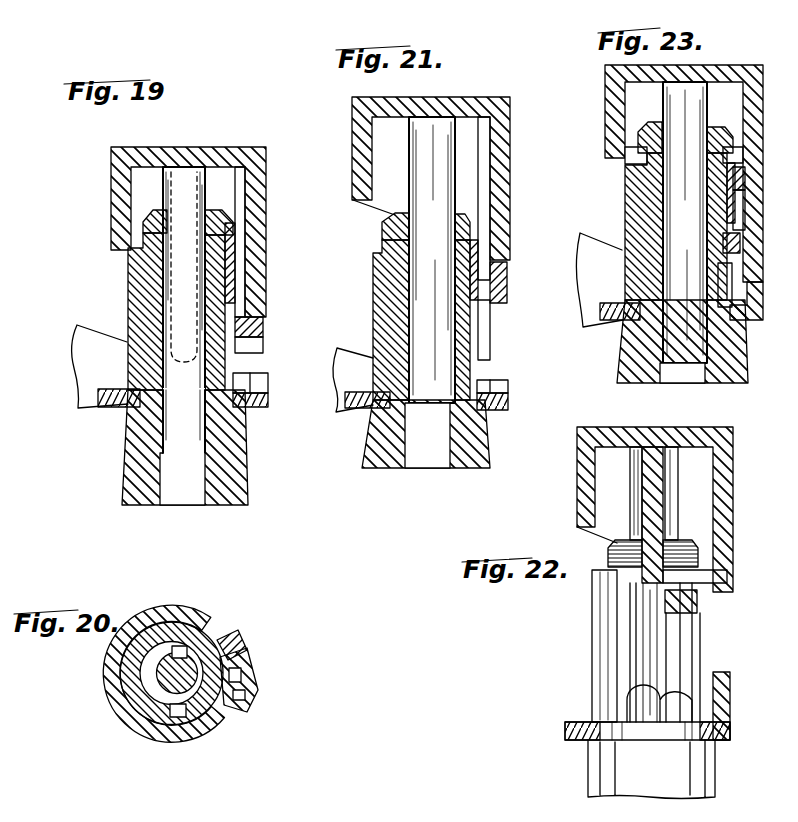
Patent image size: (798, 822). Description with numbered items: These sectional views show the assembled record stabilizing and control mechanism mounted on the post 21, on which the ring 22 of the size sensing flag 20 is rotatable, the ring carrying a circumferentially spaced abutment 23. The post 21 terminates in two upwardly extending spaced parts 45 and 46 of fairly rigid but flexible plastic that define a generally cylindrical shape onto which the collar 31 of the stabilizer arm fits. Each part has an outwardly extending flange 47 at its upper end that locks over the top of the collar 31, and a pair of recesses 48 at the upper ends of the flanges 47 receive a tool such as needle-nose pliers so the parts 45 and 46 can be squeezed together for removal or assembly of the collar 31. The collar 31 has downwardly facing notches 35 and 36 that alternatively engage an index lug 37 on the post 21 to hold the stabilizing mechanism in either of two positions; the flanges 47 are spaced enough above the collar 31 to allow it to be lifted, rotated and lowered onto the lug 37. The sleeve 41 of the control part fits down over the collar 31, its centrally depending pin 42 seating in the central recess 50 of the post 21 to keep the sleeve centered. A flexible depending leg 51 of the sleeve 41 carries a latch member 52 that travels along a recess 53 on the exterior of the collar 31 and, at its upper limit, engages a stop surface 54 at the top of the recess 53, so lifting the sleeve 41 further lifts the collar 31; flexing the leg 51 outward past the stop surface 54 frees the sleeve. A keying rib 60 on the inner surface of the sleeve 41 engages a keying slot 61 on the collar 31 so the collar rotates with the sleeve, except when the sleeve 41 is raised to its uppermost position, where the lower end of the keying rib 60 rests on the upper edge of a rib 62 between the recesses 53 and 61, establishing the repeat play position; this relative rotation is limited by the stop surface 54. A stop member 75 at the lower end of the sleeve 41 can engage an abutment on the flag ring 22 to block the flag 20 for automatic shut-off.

In FIG. 19, the size sensing flag 20 is at (83, 380).
In FIG. 21, the size sensing flag 20 is at (340, 395).
In FIG. 23, the size sensing flag 20 is at (592, 258).
In FIG. 19, the mounting post 21 is at (230, 480).
In FIG. 21, the mounting post 21 is at (388, 470).
In FIG. 23, the mounting post 21 is at (740, 347).
In FIG. 22, the mounting post 21 is at (600, 780).
In FIG. 19, the ring 22 is at (255, 408).
In FIG. 21, the ring 22 is at (365, 413).
In FIG. 23, the ring 22 is at (612, 323).
In FIG. 22, the ring 22 is at (565, 730).
In FIG. 20, the abutment 23 is at (270, 616).
In FIG. 19, the collar 31 is at (135, 360).
In FIG. 21, the collar 31 is at (378, 298).
In FIG. 23, the collar 31 is at (627, 207).
In FIG. 22, the collar 31 is at (600, 585).
In FIG. 20, the collar 31 is at (170, 735).
In FIG. 22, the notch 35 is at (625, 700).
In FIG. 22, the notch 36 is at (700, 703).
In FIG. 19, the lug 37 is at (245, 378).
In FIG. 21, the lug 37 is at (475, 372).
In FIG. 22, the lug 37 is at (638, 722).
In FIG. 19, the sleeve 41 is at (217, 150).
In FIG. 21, the sleeve 41 is at (508, 137).
In FIG. 23, the sleeve 41 is at (748, 65).
In FIG. 22, the sleeve 41 is at (735, 460).
In FIG. 20, the sleeve 41 is at (175, 607).
In FIG. 19, the pin 42 is at (178, 430).
In FIG. 21, the pin 42 is at (418, 166).
In FIG. 23, the pin 42 is at (690, 372).
In FIG. 20, the pin 42 is at (190, 725).
In FIG. 19, the upwardly-extending spaced part 45 is at (150, 302).
In FIG. 21, the upwardly-extending spaced part 45 is at (392, 320).
In FIG. 23, the upwardly-extending spaced part 45 is at (630, 183).
In FIG. 20, the upwardly-extending spaced part 45 is at (130, 725).
In FIG. 19, the upwardly-extending spaced part 46 is at (220, 280).
In FIG. 21, the upwardly-extending spaced part 46 is at (470, 315).
In FIG. 23, the upwardly-extending spaced part 46 is at (745, 195).
In FIG. 20, the upwardly-extending spaced part 46 is at (222, 710).
In FIG. 19, the outwardly extending flange 47 is at (145, 227).
In FIG. 21, the outwardly extending flange 47 is at (385, 222).
In FIG. 23, the outwardly extending flange 47 is at (735, 135).
In FIG. 22, the outwardly extending flange 47 is at (610, 555).
In FIG. 19, the recess 48 is at (150, 218).
In FIG. 19, the central recess 50 is at (172, 488).
In FIG. 21, the central recess 50 is at (445, 460).
In FIG. 23, the central recess 50 is at (665, 388).
In FIG. 23, the flexible depending leg 51 is at (750, 215).
In FIG. 20, the flexible depending leg 51 is at (240, 640).
In FIG. 23, the latch member 52 is at (735, 258).
In FIG. 22, the latch member 52 is at (700, 603).
In FIG. 20, the latch member 52 is at (245, 665).
In FIG. 23, the recess 53 is at (742, 180).
In FIG. 22, the recess 53 is at (685, 640).
In FIG. 20, the recess 53 is at (210, 640).
In FIG. 23, the stop surface 54 is at (742, 165).
In FIG. 22, the stop surface 54 is at (715, 577).
In FIG. 19, the keying rib 60 is at (240, 245).
In FIG. 21, the keying rib 60 is at (485, 170).
In FIG. 22, the keying rib 60 is at (655, 500).
In FIG. 20, the keying rib 60 is at (252, 685).
In FIG. 22, the keying slot 61 is at (630, 622).
In FIG. 20, the keying slot 61 is at (245, 700).
In FIG. 19, the rib 62 is at (238, 320).
In FIG. 21, the rib 62 is at (488, 338).
In FIG. 22, the rib 62 is at (650, 640).
In FIG. 20, the rib 62 is at (255, 672).
In FIG. 19, the stop member 75 is at (252, 340).
In FIG. 21, the stop member 75 is at (508, 300).